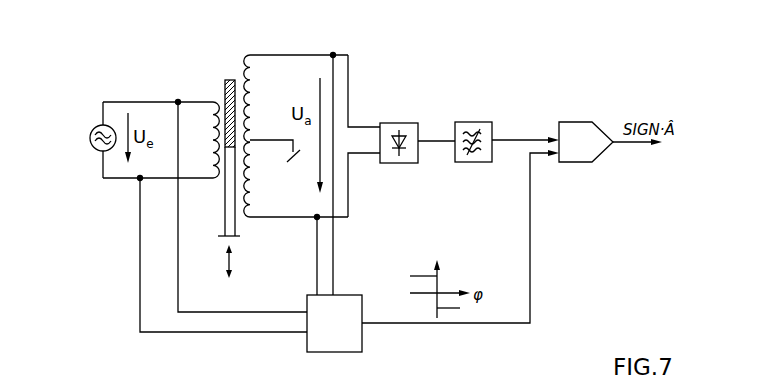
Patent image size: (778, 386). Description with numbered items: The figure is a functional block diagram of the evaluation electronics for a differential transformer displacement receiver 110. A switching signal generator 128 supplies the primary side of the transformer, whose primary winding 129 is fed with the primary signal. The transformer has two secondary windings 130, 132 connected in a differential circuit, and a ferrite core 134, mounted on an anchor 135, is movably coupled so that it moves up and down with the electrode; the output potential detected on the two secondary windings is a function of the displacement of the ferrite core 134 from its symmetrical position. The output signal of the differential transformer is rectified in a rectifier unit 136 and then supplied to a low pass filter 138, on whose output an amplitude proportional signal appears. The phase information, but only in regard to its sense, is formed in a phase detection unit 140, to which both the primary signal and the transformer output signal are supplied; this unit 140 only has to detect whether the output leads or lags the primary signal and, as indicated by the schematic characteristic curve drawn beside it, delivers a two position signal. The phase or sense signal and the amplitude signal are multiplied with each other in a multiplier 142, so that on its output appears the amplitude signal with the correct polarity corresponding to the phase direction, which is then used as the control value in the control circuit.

The inductive displacement transducer 110 is at (213, 56).
The switching signal generator 128 is at (90, 142).
The primary winding 129 is at (213, 127).
The secondary winding 130 is at (250, 88).
The secondary winding 132 is at (250, 177).
The ferrite core 134 is at (230, 80).
The anchor 135 is at (232, 199).
The rectifier unit 136 is at (395, 123).
The low pass filter 138 is at (470, 122).
The phase detection unit 140 is at (363, 337).
The multiplier 142 is at (576, 122).